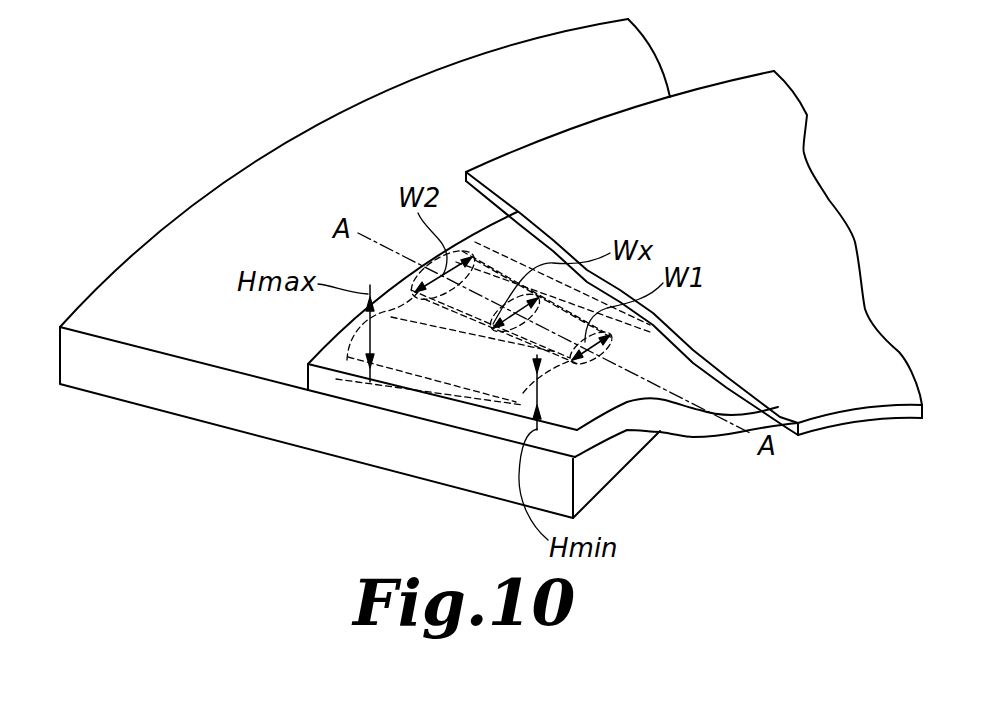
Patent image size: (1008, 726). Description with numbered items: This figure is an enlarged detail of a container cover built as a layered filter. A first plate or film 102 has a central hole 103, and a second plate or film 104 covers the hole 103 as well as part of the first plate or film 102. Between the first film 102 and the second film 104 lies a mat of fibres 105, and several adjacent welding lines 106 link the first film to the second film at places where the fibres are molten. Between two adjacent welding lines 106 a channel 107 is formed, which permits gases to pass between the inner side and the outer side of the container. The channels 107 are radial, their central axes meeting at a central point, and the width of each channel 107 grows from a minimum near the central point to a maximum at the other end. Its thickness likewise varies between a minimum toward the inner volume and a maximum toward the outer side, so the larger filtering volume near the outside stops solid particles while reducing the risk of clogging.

The first plate or film 102 is at (130, 384).
The central hole 103 is at (660, 433).
The second plate or film 104 is at (803, 113).
The mat of fibres 105 is at (322, 386).
The welding lines 106 is at (512, 287).
The channel 107 is at (485, 273).